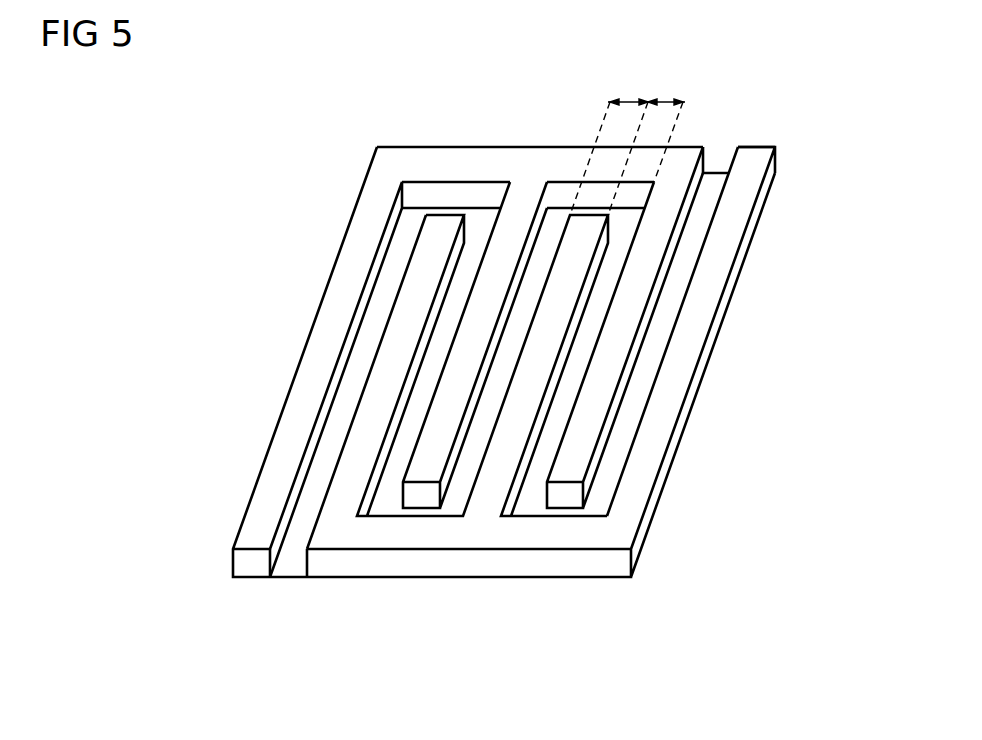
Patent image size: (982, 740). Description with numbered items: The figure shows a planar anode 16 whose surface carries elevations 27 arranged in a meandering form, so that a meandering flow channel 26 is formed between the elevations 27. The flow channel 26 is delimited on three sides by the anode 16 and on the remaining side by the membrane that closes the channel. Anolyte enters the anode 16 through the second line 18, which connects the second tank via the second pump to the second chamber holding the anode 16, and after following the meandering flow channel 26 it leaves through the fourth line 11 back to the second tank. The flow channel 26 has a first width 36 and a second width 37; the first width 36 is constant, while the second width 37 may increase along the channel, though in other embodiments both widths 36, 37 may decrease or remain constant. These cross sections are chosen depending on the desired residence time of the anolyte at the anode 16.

The fourth line 11 is at (720, 160).
The anode 16 is at (732, 290).
The second line 18 is at (293, 548).
The flow channel 26 is at (555, 222).
The elevations 27 is at (728, 240).
The first width 36 is at (628, 101).
The second width 37 is at (664, 101).